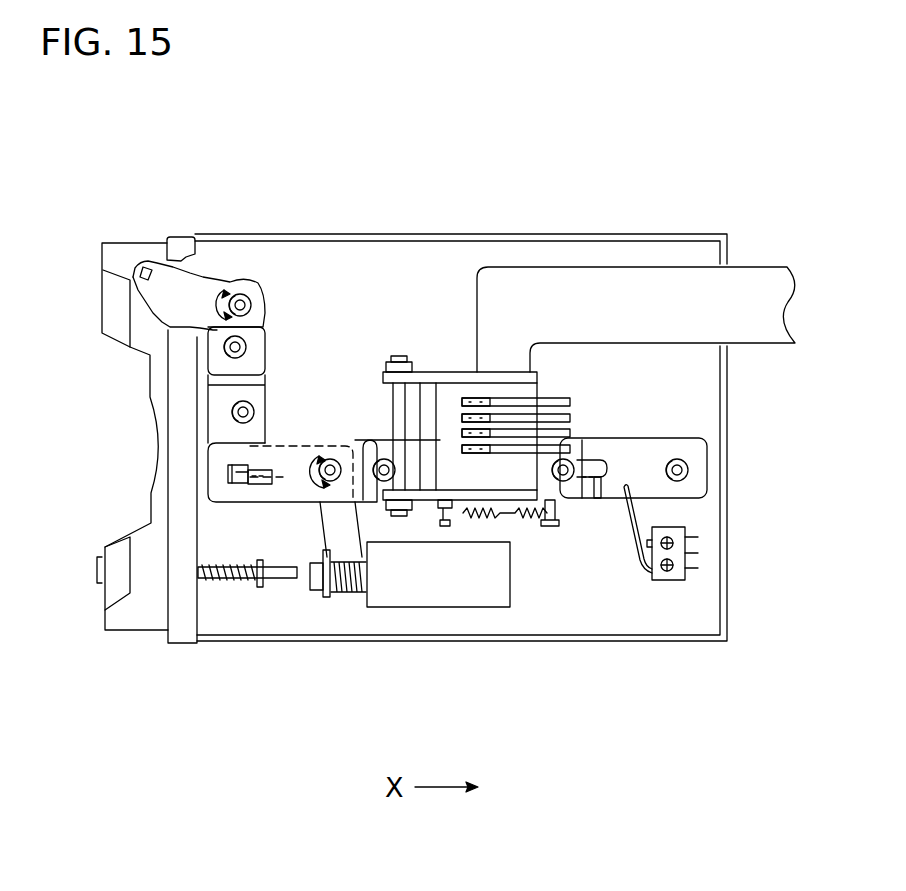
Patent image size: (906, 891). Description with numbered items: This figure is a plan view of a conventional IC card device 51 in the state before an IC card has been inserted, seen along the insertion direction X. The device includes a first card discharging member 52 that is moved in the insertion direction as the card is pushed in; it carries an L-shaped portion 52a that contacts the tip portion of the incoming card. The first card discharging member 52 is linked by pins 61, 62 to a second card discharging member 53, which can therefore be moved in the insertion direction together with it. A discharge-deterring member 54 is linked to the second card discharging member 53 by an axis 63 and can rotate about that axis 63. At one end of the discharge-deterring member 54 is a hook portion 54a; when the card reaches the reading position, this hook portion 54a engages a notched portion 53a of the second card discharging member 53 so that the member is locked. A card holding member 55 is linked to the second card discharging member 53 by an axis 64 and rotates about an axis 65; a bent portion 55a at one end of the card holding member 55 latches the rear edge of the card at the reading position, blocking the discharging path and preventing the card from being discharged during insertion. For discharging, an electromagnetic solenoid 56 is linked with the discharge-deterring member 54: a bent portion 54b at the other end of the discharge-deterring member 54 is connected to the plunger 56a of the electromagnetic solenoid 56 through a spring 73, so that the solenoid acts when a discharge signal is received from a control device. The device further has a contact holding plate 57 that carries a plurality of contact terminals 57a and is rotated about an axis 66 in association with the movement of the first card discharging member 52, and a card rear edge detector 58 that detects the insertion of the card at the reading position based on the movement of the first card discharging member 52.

The IC card device 51 is at (450, 228).
The first card discharging member 52 is at (573, 493).
The L-shaped portion 52a is at (600, 498).
The second card discharging member 53 is at (698, 487).
The notched portion 53a is at (232, 462).
The discharge-deterring member 54 is at (342, 518).
The hook portion 54a is at (250, 484).
The bent portion 54b is at (320, 578).
The card holding member 55 is at (237, 282).
The bent portion 55a is at (148, 262).
The electromagnetic solenoid 56 is at (500, 600).
The plunger 56a is at (320, 590).
The contact holding plate 57 is at (455, 378).
The contact terminals 57a is at (540, 400).
The card rear edge detector 58 is at (680, 576).
The pin 61 is at (575, 455).
The pin 62 is at (378, 460).
The axis 63 is at (333, 455).
The axis 64 is at (258, 345).
The axis 65 is at (254, 305).
The axis 66 is at (398, 397).
The spring 73 is at (360, 596).